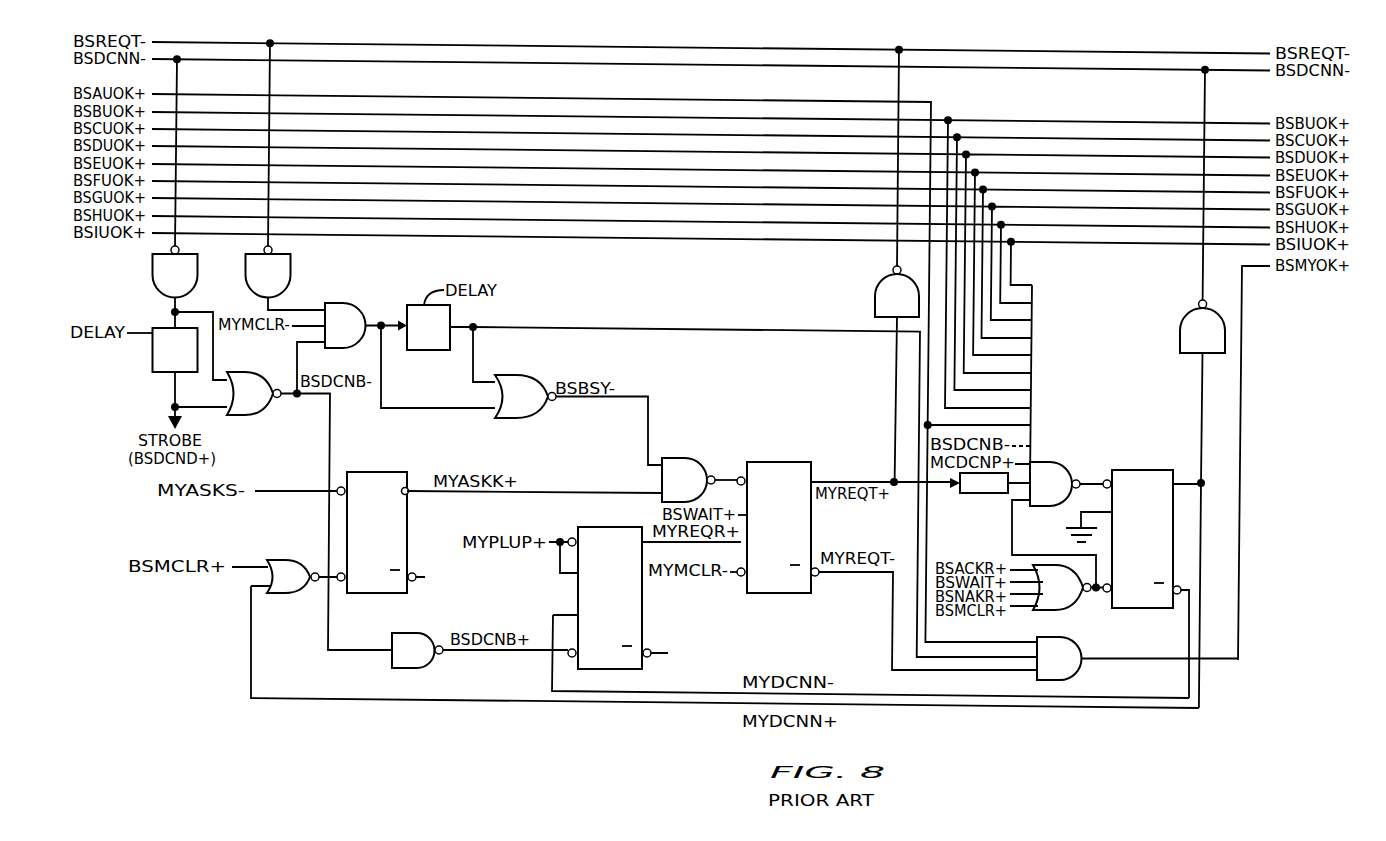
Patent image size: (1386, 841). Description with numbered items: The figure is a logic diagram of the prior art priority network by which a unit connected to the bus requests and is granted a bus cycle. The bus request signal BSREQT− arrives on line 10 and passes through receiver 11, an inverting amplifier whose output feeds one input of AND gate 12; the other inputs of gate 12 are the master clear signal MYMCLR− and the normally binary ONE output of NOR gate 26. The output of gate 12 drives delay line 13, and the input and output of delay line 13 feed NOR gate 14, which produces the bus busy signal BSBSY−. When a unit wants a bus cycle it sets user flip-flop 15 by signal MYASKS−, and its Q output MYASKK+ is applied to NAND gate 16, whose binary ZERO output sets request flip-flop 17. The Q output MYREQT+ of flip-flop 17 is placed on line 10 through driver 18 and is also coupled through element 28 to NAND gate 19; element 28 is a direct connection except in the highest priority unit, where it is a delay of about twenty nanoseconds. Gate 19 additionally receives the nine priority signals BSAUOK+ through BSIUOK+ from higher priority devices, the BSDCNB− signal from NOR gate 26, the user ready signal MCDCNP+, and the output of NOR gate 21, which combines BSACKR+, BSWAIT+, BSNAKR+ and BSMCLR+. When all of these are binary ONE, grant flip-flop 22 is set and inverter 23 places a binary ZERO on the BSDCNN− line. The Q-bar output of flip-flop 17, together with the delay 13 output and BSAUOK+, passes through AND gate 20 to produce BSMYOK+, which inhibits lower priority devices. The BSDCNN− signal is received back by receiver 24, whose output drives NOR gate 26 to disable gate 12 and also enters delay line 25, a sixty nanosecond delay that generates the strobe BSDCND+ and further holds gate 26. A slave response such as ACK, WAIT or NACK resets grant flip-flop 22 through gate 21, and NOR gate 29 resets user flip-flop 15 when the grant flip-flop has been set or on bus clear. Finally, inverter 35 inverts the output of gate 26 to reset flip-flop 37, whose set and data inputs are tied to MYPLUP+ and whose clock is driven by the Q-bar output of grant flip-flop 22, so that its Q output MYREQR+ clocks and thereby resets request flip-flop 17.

The line 10 is at (316, 44).
The receiver 11 is at (292, 271).
The AND gate 12 is at (347, 304).
The delay line 13 is at (418, 350).
The NOR gate 14 is at (512, 375).
The user flip-flop 15 is at (400, 472).
The NAND gate 16 is at (695, 458).
The request flip-flop 17 is at (770, 462).
The driver 18 is at (875, 301).
The NAND gate 19 is at (1050, 462).
The AND gate 20 is at (1076, 650).
The NOR gate 21 is at (1065, 601).
The grant flip-flop 22 is at (1128, 470).
The inverter 23 is at (1186, 324).
The receiver 24 is at (199, 270).
The delay line 25 is at (152, 365).
The NOR gate 26 is at (265, 383).
The element 28 is at (980, 495).
The NOR gate 29 is at (300, 597).
The inverter 35 is at (426, 633).
The flip-flop 37 is at (590, 527).